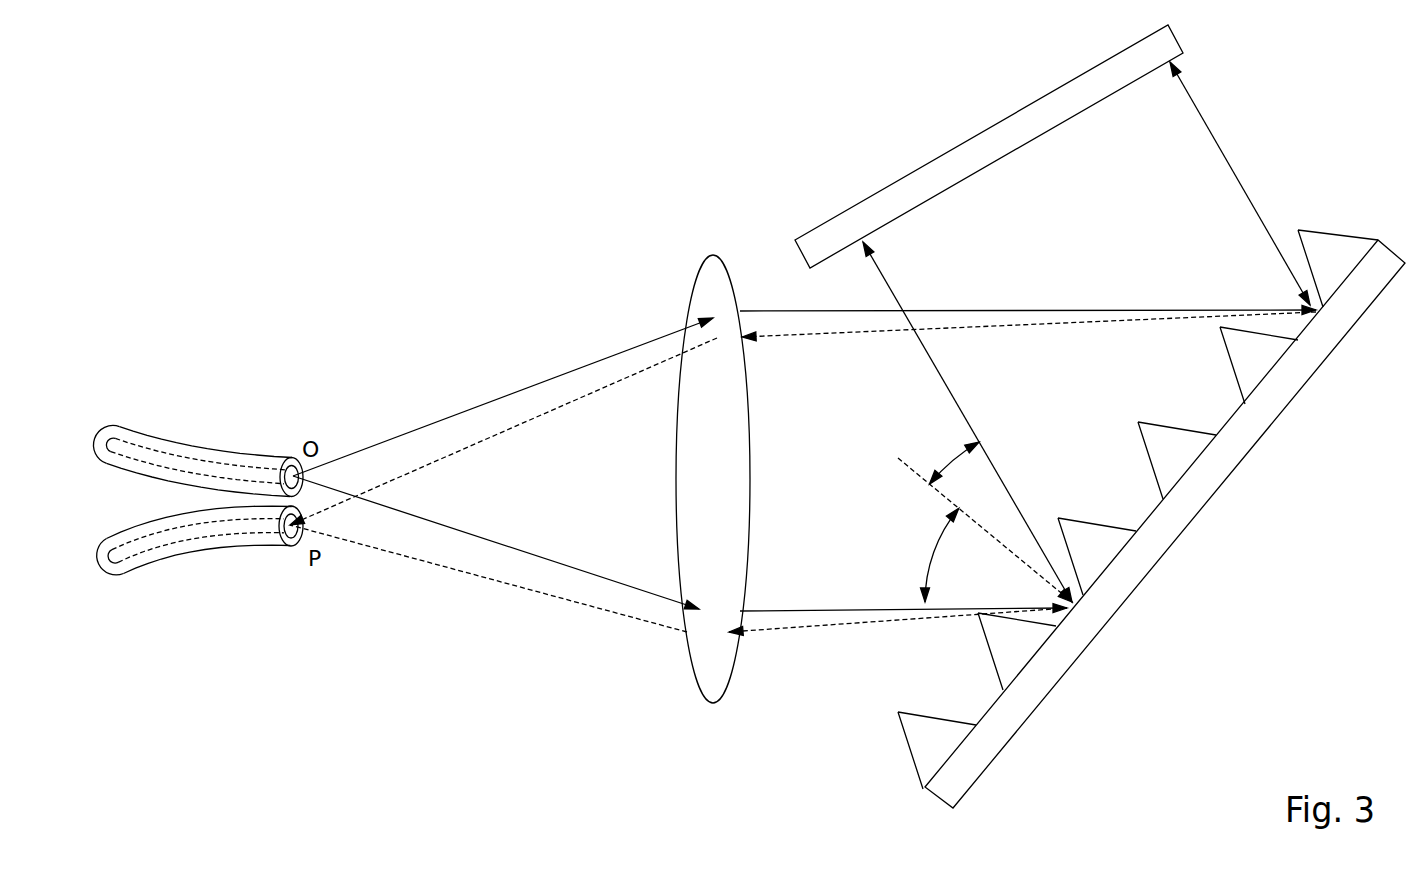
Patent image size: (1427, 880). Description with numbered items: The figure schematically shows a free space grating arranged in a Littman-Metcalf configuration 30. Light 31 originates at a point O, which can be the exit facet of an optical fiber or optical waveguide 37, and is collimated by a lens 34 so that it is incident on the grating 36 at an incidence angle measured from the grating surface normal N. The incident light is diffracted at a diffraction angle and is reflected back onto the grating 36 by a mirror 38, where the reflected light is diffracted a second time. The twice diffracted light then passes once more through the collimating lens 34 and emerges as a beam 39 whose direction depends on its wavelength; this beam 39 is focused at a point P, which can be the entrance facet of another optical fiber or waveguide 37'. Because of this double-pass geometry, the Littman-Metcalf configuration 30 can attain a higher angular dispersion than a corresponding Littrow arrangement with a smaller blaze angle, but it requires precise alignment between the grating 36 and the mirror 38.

The Littman-Metcalf configuration 30 is at (863, 703).
The light 31 is at (596, 360).
The lens 34 is at (713, 703).
The grating 36 is at (1087, 647).
The optical fiber or optical waveguide 37 is at (198, 442).
The optical fiber or optical waveguide 37' is at (200, 569).
The mirror 38 is at (968, 138).
The beam 39 is at (586, 602).